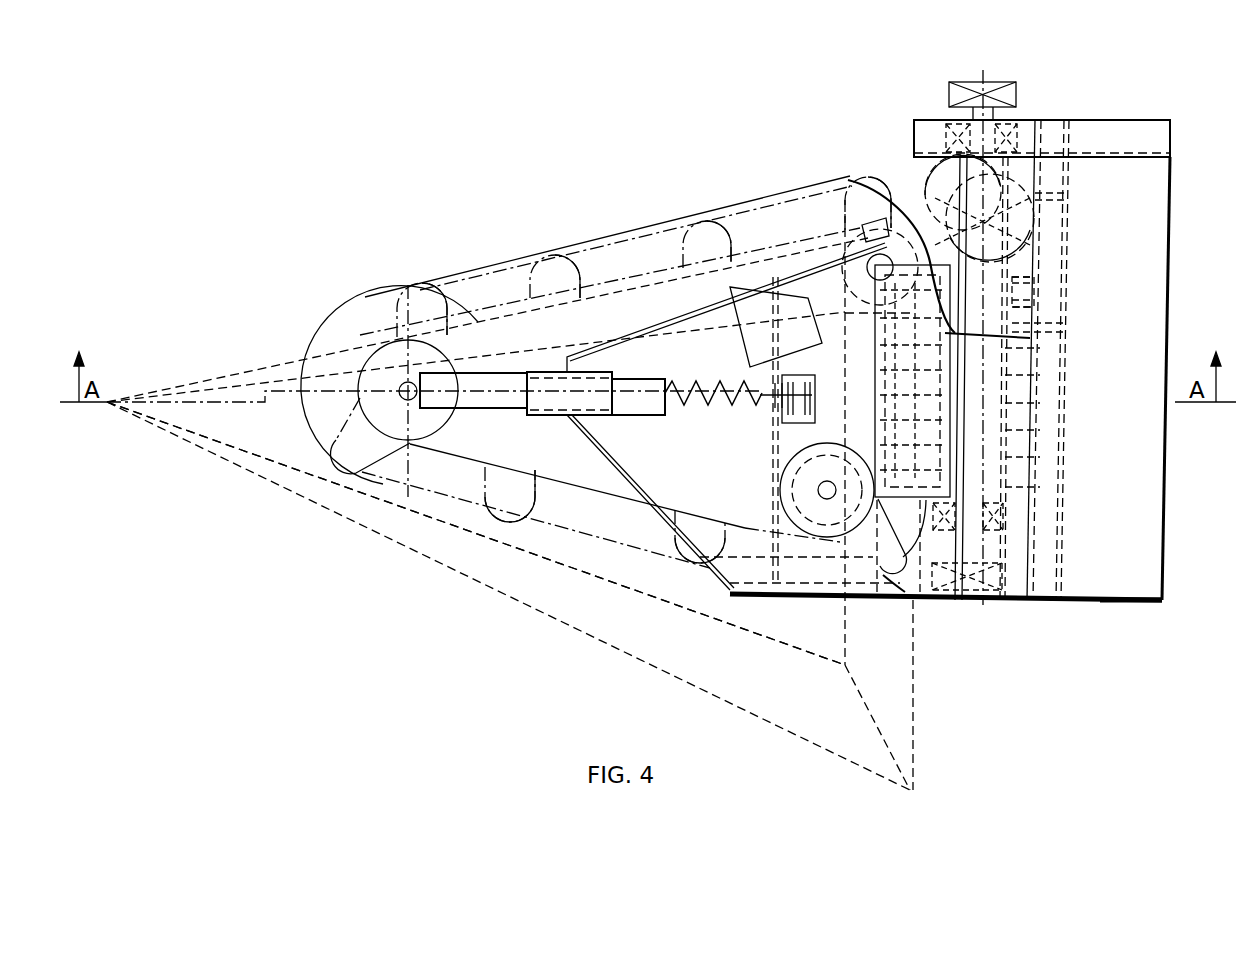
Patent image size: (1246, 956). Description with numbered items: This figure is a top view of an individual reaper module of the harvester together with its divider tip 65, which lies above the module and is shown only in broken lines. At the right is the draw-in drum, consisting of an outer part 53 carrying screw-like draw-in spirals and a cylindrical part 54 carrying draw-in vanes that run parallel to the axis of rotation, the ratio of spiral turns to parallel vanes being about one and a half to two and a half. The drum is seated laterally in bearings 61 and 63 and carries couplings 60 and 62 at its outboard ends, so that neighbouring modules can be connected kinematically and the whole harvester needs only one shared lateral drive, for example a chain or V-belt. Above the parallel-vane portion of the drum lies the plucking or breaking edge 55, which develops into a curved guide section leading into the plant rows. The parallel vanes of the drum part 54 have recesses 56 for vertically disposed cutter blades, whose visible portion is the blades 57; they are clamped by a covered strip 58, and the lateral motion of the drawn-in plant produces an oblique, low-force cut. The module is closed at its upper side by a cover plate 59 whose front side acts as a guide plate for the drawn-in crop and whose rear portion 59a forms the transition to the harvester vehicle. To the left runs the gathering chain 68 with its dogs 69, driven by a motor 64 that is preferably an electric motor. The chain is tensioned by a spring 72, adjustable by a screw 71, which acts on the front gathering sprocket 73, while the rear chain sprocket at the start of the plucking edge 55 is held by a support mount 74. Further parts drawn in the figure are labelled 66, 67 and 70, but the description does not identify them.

The outer part of the draw-in drum 53 is at (937, 182).
The cylindrical part of the draw-in drum 54 is at (945, 372).
The plucking or breaking edge 55 is at (862, 206).
The recesses 56 is at (1023, 278).
The cutter blades 57 is at (985, 330).
The strip 58 is at (900, 387).
The cover plate 59 is at (980, 255).
The rear portion of the cover plate 59a is at (1113, 573).
The coupling 60 is at (993, 583).
The bearing 61 is at (948, 134).
The coupling 62 is at (950, 94).
The bearing 63 is at (997, 530).
The motor 64 is at (812, 502).
The divider tip 65 is at (665, 348).
The housing 66 is at (772, 445).
The guide 67 is at (883, 577).
The gathering chain 68 is at (612, 494).
The dogs 69 is at (500, 510).
The hopper wall 70 is at (432, 537).
The screw 71 is at (800, 390).
The spring 72 is at (672, 392).
The front gathering sprocket 73 is at (390, 413).
The support mount 74 is at (797, 282).